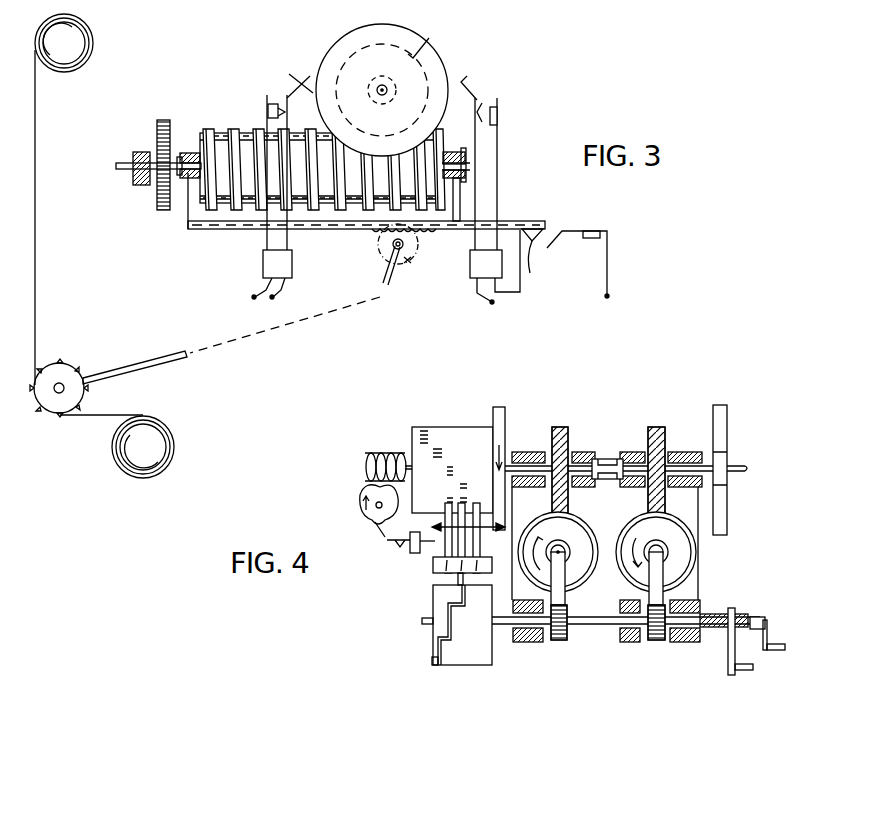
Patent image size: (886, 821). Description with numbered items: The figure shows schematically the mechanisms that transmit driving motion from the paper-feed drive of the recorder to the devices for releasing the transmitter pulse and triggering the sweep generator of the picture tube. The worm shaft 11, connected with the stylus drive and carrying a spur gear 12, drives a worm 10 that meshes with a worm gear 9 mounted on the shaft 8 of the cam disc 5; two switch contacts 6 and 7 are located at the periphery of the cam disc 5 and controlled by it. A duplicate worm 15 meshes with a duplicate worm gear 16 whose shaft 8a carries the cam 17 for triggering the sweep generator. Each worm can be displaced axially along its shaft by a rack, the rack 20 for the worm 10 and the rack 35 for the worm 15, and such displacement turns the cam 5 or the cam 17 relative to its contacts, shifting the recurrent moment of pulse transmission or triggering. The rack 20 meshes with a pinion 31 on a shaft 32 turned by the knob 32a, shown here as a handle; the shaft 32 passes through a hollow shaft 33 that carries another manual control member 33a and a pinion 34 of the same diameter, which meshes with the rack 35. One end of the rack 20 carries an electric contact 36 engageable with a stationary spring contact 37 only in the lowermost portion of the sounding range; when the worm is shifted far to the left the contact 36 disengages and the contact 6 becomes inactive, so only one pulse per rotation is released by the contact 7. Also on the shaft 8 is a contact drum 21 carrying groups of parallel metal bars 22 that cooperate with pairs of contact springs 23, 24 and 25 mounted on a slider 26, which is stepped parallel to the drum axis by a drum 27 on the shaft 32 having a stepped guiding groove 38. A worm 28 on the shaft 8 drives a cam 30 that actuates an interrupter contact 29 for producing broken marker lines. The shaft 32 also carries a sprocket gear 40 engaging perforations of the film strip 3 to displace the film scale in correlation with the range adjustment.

In FIG. 3, the film strip 3 is at (37, 225).
In FIG. 3, the cam disc 5 is at (408, 24).
In FIG. 4, the cam disc 5 is at (504, 409).
In FIG. 3, the switch contact 6 is at (484, 102).
In FIG. 3, the switch contact 7 is at (276, 99).
In FIG. 3, the shaft 8 is at (381, 76).
In FIG. 4, the shaft 8 is at (603, 459).
In FIG. 4, the shaft 8a is at (618, 460).
In FIG. 4, the worm gear 9 is at (558, 428).
In FIG. 3, the worm 10 is at (229, 128).
In FIG. 4, the worm 10 is at (588, 573).
In FIG. 3, the worm shaft 11 is at (123, 163).
In FIG. 3, the spur gear 12 is at (165, 119).
In FIG. 4, the worm 15 is at (632, 528).
In FIG. 4, the worm gear 16 is at (657, 428).
In FIG. 4, the cam 17 is at (728, 427).
In FIG. 3, the rack 20 is at (216, 231).
In FIG. 4, the rack 20 is at (551, 594).
In FIG. 3, the contact drum 21 is at (428, 39).
In FIG. 4, the contact drum 21 is at (462, 422).
In FIG. 4, the metal bars 22 is at (424, 430).
In FIG. 4, the contact springs 23 is at (447, 507).
In FIG. 4, the contact springs 24 is at (463, 499).
In FIG. 4, the contact springs 25 is at (480, 545).
In FIG. 4, the slider 26 is at (433, 567).
In FIG. 4, the drum 27 is at (463, 661).
In FIG. 4, the worm 28 is at (378, 452).
In FIG. 4, the interrupter contact 29 is at (388, 541).
In FIG. 4, the cam 30 is at (358, 508).
In FIG. 3, the pinion 31 is at (404, 255).
In FIG. 4, the pinion 31 is at (558, 641).
In FIG. 3, the shaft 32 is at (158, 359).
In FIG. 4, the shaft 32 is at (594, 628).
In FIG. 4, the knob 32a is at (772, 633).
In FIG. 4, the hollow shaft 33 is at (716, 613).
In FIG. 4, the manual control member 33a is at (729, 666).
In FIG. 4, the pinion 34 is at (657, 642).
In FIG. 4, the rack 35 is at (653, 578).
In FIG. 3, the electric contact 36 is at (537, 269).
In FIG. 3, the stationary spring contact 37 is at (553, 239).
In FIG. 4, the stepped guiding groove 38 is at (434, 661).
In FIG. 3, the sprocket gear 40 is at (66, 373).